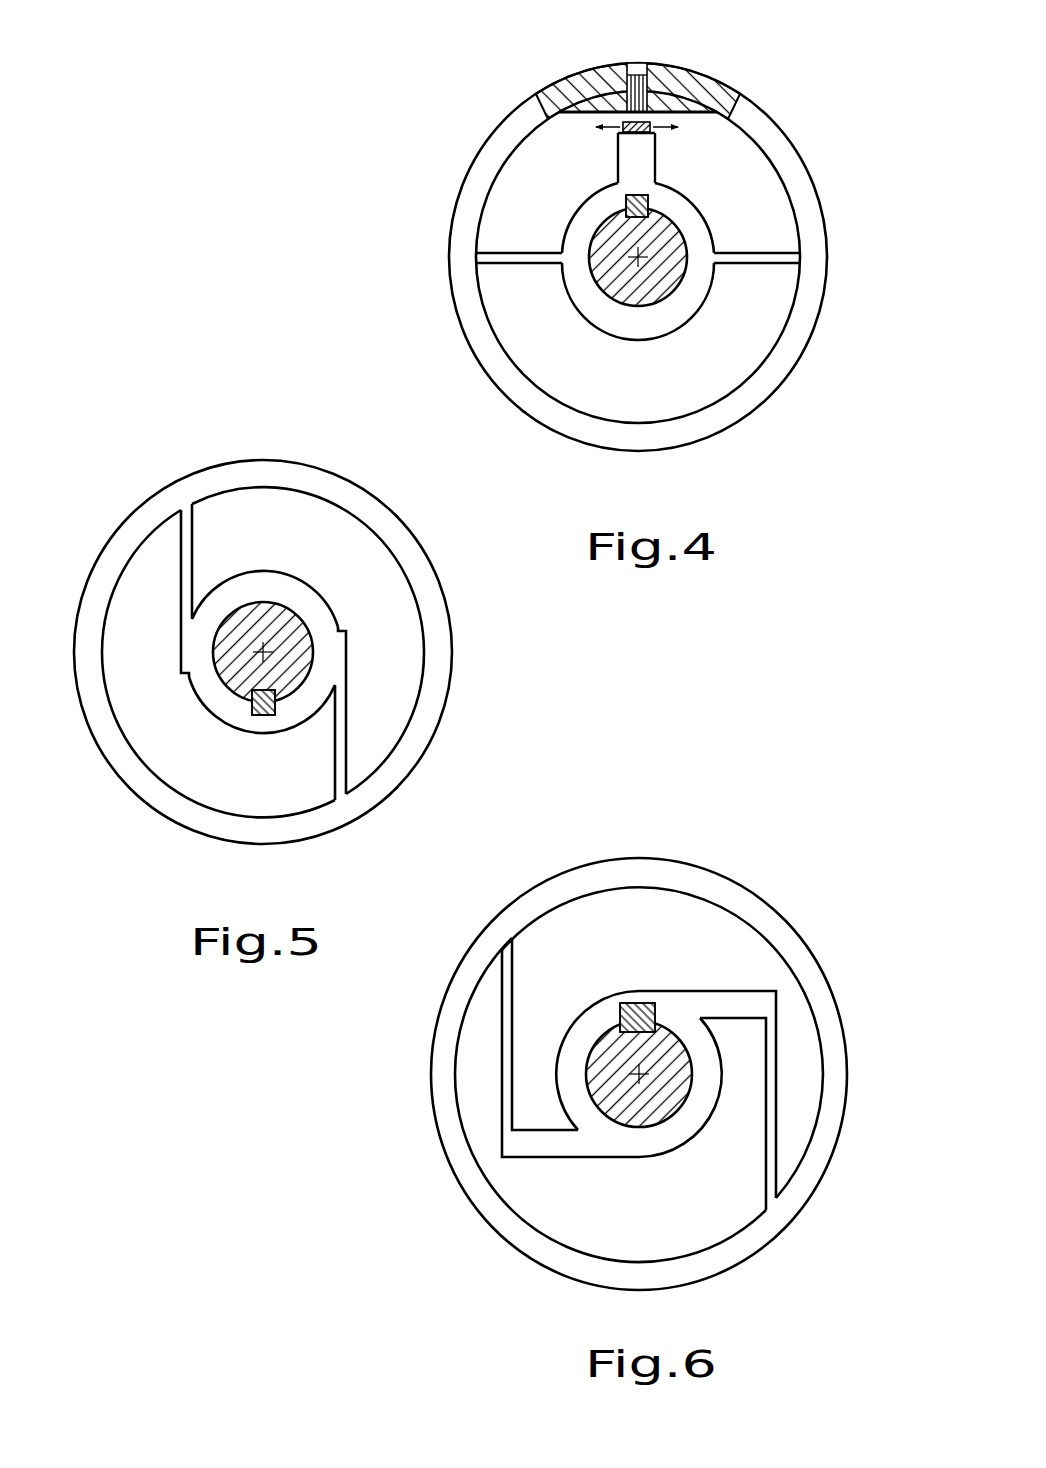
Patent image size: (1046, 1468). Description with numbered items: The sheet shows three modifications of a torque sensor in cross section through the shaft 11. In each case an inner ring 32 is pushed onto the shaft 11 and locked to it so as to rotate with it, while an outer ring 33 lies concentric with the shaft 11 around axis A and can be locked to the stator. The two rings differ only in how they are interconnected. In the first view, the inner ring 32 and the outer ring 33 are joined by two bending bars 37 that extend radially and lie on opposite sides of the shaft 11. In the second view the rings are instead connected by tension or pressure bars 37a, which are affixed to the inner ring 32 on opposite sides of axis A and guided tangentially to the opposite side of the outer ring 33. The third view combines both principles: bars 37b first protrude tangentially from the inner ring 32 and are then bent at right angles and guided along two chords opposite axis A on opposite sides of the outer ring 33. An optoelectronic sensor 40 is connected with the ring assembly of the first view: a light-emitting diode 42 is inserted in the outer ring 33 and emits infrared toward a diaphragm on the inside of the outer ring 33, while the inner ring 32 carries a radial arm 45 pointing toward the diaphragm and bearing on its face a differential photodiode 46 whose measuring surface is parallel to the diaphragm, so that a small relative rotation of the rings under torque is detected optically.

In FIG. 4, the shaft 11 is at (667, 277).
In FIG. 5, the shaft 11 is at (242, 613).
In FIG. 6, the shaft 11 is at (663, 1097).
In FIG. 4, the inner ring 32 is at (589, 310).
In FIG. 5, the inner ring 32 is at (320, 620).
In FIG. 6, the inner ring 32 is at (593, 1017).
In FIG. 4, the outer ring 33 is at (772, 135).
In FIG. 5, the outer ring 33 is at (288, 472).
In FIG. 6, the outer ring 33 is at (692, 878).
In FIG. 4, the bending bars 37 is at (502, 253).
In FIG. 5, the tension or pressure bars 37a is at (183, 555).
In FIG. 6, the bars 37b is at (750, 1000).
In FIG. 4, the optoelectronic sensor 40 is at (587, 137).
In FIG. 4, the light-emitting diode 42 is at (641, 90).
In FIG. 4, the radial arm 45 is at (655, 160).
In FIG. 4, the differential photodiode 46 is at (625, 132).
In FIG. 4, the axis A is at (640, 262).
In FIG. 5, the axis A is at (307, 607).
In FIG. 6, the axis A is at (628, 1088).